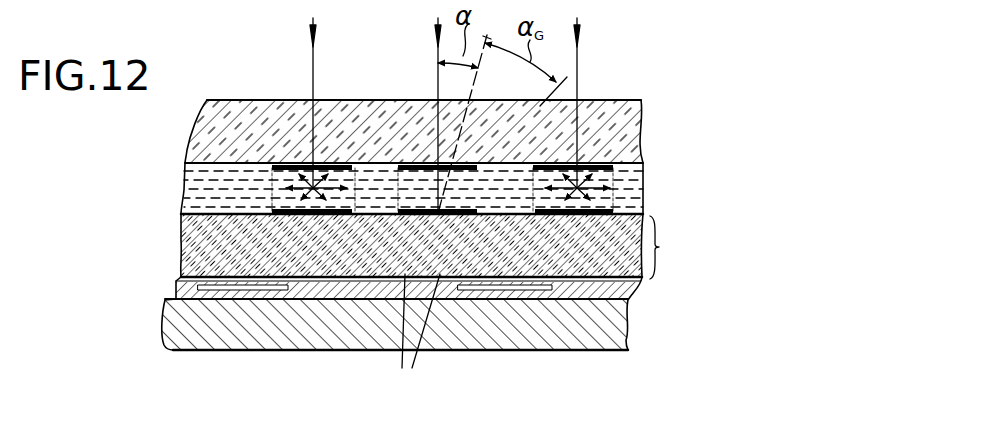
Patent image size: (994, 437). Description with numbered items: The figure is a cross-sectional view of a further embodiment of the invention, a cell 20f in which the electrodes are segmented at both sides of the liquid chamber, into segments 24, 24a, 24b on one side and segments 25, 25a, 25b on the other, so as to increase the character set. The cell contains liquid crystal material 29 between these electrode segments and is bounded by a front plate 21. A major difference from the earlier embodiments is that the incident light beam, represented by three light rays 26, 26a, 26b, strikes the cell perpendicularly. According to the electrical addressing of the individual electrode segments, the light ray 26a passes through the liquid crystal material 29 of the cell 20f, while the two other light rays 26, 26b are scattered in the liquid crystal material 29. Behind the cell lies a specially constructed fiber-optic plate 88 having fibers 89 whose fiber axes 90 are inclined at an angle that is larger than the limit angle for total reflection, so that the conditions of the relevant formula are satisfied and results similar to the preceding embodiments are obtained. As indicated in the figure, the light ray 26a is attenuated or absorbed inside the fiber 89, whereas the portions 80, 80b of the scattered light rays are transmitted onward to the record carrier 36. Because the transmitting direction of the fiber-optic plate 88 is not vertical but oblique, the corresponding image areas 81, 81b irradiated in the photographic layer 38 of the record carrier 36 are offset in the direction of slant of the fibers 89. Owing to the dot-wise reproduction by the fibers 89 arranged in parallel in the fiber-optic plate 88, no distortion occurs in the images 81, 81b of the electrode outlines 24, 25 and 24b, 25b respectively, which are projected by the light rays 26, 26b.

The cell 20f is at (648, 98).
The front glass plate 21 is at (200, 127).
The liquid crystal material 29 is at (185, 187).
The electrode segment 24 is at (298, 164).
The electrode segment 24a is at (418, 164).
The electrode segment 24b is at (613, 172).
The electrode segment 25 is at (272, 208).
The electrode segment 25a is at (473, 213).
The electrode segment 25b is at (613, 206).
The light ray 26 is at (312, 79).
The light ray 26a is at (437, 77).
The light ray 26b is at (578, 62).
The portion of light ray 80 is at (248, 257).
The portion of light ray 80b is at (617, 282).
The image area 81 is at (176, 292).
The image area 81b is at (552, 298).
The fiber-optic plate 88 is at (673, 247).
The fiber 89 is at (413, 333).
The photographic layer 38 is at (176, 285).
The record carrier 36 is at (628, 349).
The fiber axis 90 is at (545, 105).